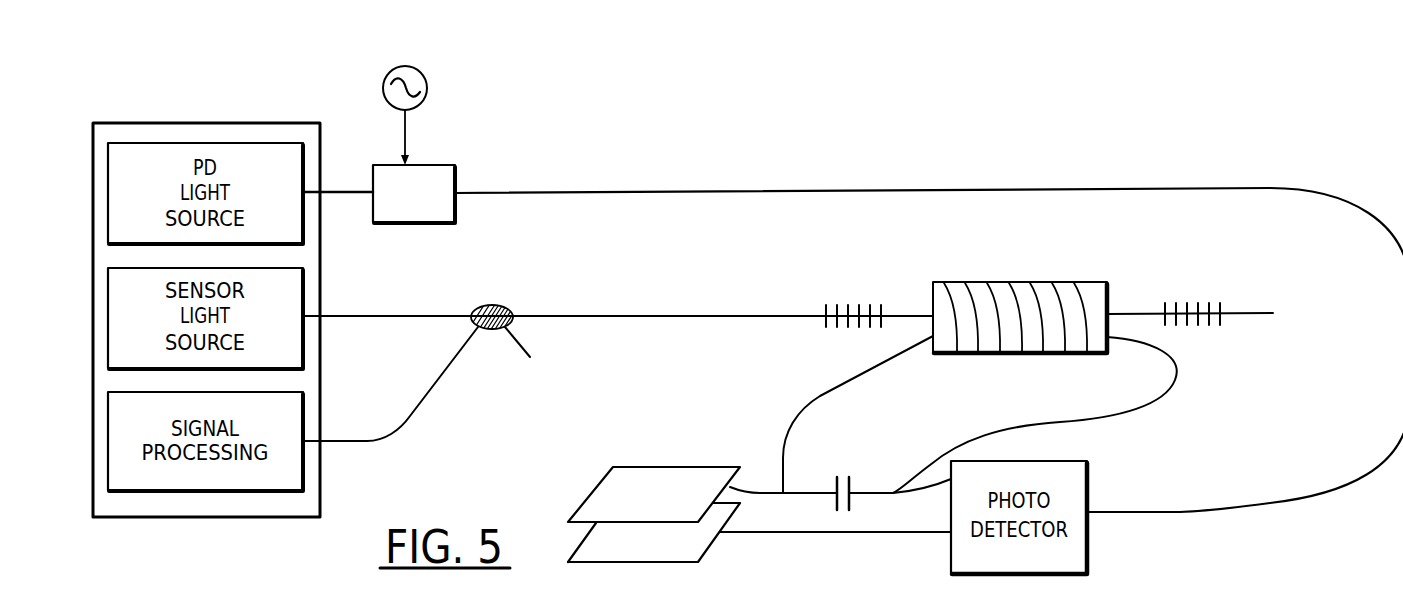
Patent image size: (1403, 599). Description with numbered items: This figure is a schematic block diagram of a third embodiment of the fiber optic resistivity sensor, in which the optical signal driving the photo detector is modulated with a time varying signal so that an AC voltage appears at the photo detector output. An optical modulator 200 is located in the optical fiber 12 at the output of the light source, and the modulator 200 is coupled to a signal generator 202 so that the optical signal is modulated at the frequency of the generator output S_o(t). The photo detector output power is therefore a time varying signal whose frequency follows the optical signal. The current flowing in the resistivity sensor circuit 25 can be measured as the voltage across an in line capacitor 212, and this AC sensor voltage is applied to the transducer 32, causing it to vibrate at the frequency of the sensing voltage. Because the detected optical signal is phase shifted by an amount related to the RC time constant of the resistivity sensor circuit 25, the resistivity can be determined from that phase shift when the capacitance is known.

The signal generator 202 is at (418, 66).
The optical modulator 200 is at (432, 165).
The optical fiber 12 is at (605, 192).
The transducer 32 is at (933, 292).
The resistivity sensor circuit 25 is at (689, 451).
The in line capacitor 212 is at (845, 474).